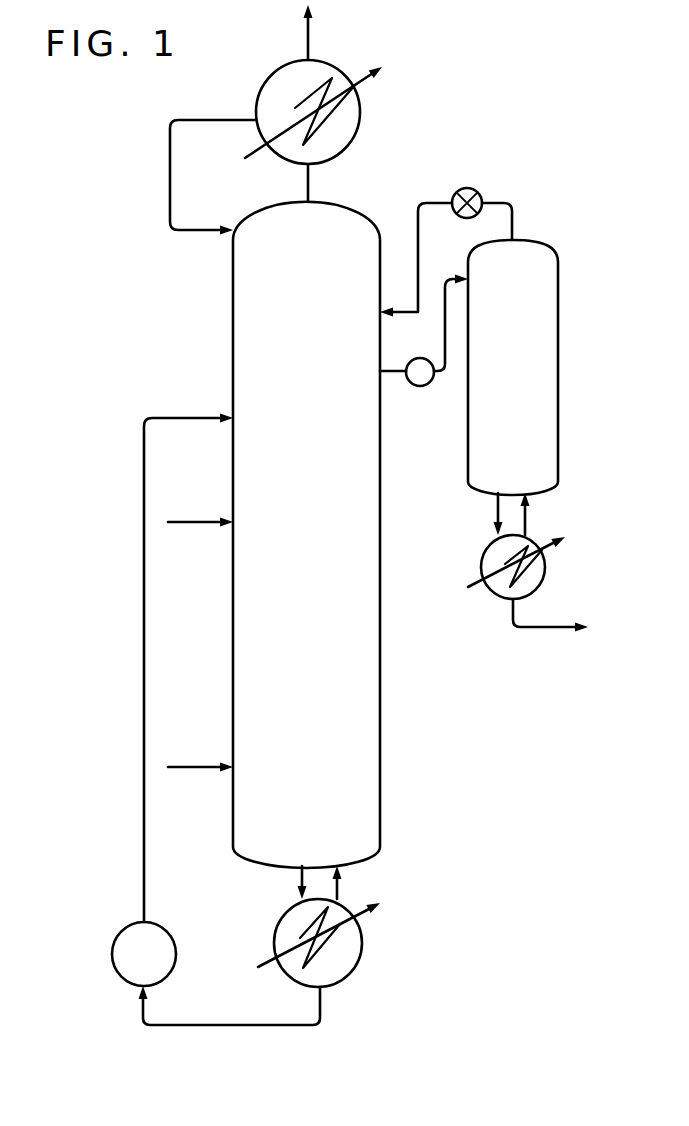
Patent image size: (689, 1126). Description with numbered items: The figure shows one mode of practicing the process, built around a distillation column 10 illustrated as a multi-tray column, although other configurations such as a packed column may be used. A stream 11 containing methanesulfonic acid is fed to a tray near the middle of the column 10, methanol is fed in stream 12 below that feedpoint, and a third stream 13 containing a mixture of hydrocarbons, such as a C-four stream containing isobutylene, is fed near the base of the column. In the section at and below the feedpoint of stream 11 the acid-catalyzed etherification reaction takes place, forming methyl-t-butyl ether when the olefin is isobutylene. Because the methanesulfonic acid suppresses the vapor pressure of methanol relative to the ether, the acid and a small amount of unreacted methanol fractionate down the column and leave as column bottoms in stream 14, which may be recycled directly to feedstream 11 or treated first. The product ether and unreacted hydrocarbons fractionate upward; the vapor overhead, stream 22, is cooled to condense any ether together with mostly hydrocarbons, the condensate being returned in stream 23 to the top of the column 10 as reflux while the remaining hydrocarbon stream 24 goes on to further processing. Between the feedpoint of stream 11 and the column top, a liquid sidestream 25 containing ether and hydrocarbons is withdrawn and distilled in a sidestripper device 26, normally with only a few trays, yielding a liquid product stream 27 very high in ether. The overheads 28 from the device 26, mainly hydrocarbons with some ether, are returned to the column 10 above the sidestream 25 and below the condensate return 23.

The distillation column 10 is at (180, 299).
The methanesulfonic acid stream 11 is at (172, 415).
The methanol stream 12 is at (185, 519).
The hydrocarbon stream 13 is at (188, 763).
The column bottoms stream 14 is at (243, 1025).
The vapor overhead stream 22 is at (308, 180).
The condensate return stream 23 is at (220, 120).
The hydrocarbon stream 24 is at (308, 41).
The liquid sidestream 25 is at (393, 372).
The sidestripper device 26 is at (552, 286).
The liquid product stream 27 is at (543, 632).
The overheads stream 28 is at (430, 203).